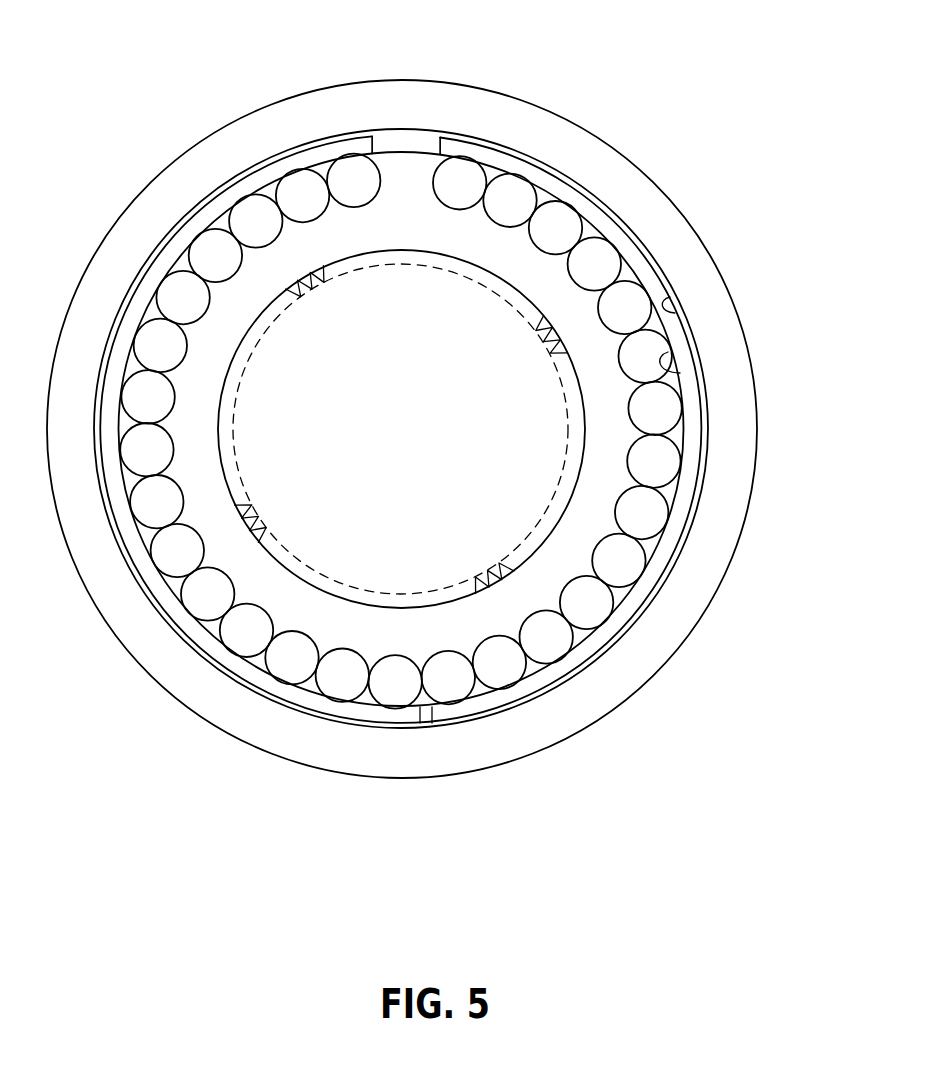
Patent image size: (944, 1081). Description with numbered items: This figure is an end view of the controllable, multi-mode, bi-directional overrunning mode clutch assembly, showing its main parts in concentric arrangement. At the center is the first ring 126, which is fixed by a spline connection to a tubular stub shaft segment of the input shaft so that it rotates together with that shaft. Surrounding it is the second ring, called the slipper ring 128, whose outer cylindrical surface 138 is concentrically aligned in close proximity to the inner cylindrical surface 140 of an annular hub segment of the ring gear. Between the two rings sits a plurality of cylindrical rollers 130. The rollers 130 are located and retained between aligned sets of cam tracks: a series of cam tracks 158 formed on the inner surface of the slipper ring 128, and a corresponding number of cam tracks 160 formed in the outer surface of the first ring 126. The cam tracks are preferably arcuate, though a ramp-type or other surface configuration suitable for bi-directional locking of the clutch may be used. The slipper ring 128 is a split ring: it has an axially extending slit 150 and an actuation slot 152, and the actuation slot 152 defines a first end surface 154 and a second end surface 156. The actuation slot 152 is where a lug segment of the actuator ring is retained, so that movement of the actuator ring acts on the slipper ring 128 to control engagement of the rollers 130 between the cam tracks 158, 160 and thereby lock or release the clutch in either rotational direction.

The first ring 126 is at (372, 238).
The slipper ring 128 is at (577, 197).
The cylindrical rollers 130 is at (606, 258).
The outer cylindrical surface 138 is at (511, 150).
The inner cylindrical surface 140 is at (675, 313).
The axially extending slit 150 is at (424, 712).
The actuation slot 152 is at (409, 141).
The first end surface 154 is at (393, 140).
The second end surface 156 is at (425, 138).
The cam tracks 158 is at (680, 373).
The cam tracks 160 is at (636, 460).